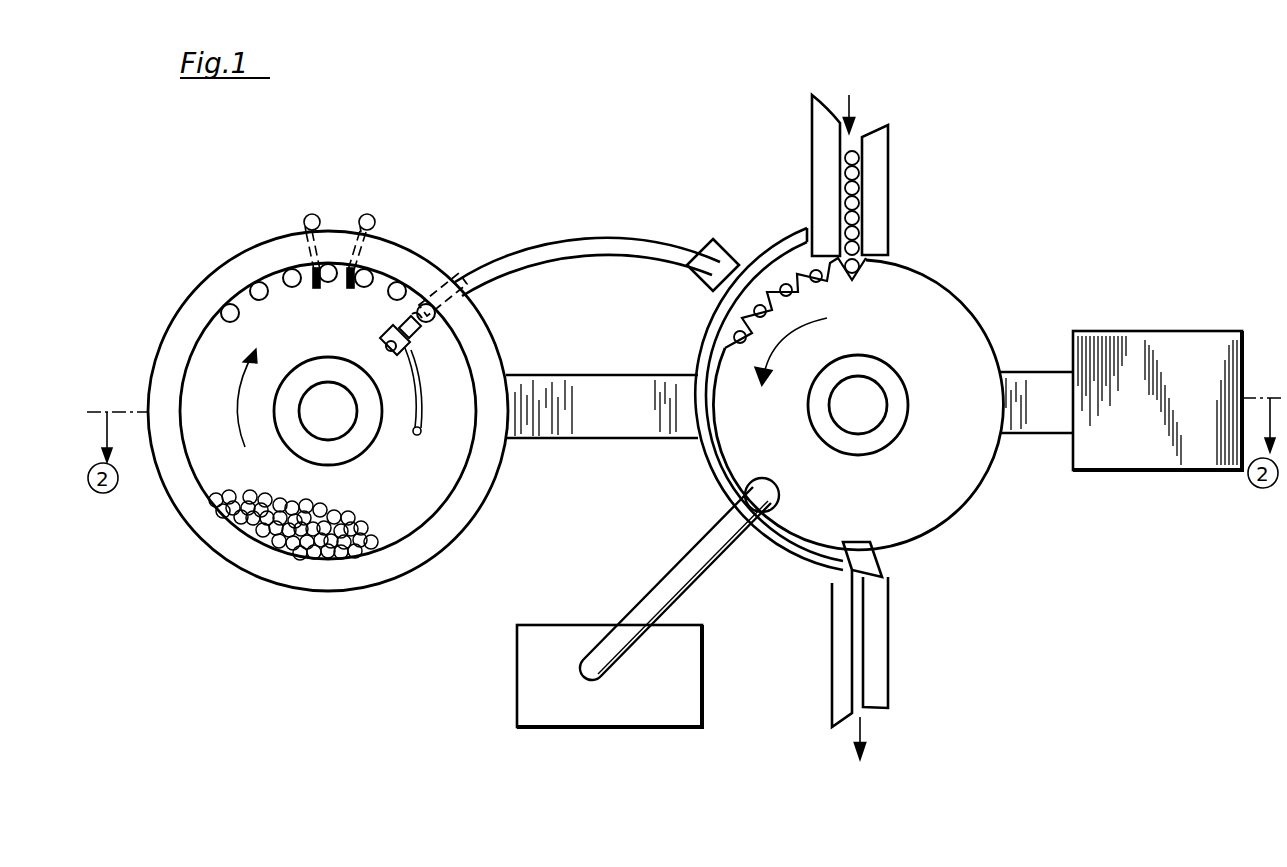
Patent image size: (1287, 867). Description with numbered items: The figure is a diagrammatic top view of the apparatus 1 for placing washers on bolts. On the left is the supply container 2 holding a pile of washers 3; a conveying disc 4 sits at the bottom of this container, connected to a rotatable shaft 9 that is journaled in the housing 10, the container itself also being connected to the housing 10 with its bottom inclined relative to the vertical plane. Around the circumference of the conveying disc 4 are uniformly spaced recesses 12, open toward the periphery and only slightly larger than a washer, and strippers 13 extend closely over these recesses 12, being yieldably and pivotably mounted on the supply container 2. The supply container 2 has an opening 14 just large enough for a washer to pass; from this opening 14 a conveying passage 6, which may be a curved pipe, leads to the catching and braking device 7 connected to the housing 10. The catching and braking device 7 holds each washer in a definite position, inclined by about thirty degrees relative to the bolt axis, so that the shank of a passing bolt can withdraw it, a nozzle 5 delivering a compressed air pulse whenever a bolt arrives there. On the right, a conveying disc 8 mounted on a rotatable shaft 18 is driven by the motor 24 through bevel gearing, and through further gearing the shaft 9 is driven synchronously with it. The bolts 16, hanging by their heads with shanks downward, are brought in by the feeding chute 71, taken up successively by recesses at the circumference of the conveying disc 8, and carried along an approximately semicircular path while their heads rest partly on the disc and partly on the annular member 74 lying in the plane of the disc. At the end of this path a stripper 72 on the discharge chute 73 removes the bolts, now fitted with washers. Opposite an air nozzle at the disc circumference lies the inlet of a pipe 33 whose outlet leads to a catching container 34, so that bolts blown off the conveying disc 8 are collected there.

The apparatus 1 is at (537, 142).
The supply container 2 is at (210, 453).
The washers 3 is at (246, 535).
The conveying disc 4 is at (213, 333).
The nozzle 5 is at (415, 338).
The conveying passage 6 is at (580, 228).
The catching and braking device 7 is at (727, 258).
The conveying disc 8 is at (930, 302).
The rotatable shaft 9 is at (323, 400).
The housing 10 is at (597, 363).
The recesses 12 is at (386, 285).
The strippers 13 is at (340, 287).
The opening 14 is at (458, 260).
The bolts 16 is at (860, 222).
The rotatable shaft 18 is at (864, 396).
The motor 24 is at (1133, 342).
The pipe 33 is at (668, 578).
The catching container 34 is at (548, 633).
The feeding chute 71 is at (868, 150).
The stripper 72 is at (868, 563).
The discharge chute 73 is at (870, 643).
The annular member 74 is at (710, 485).